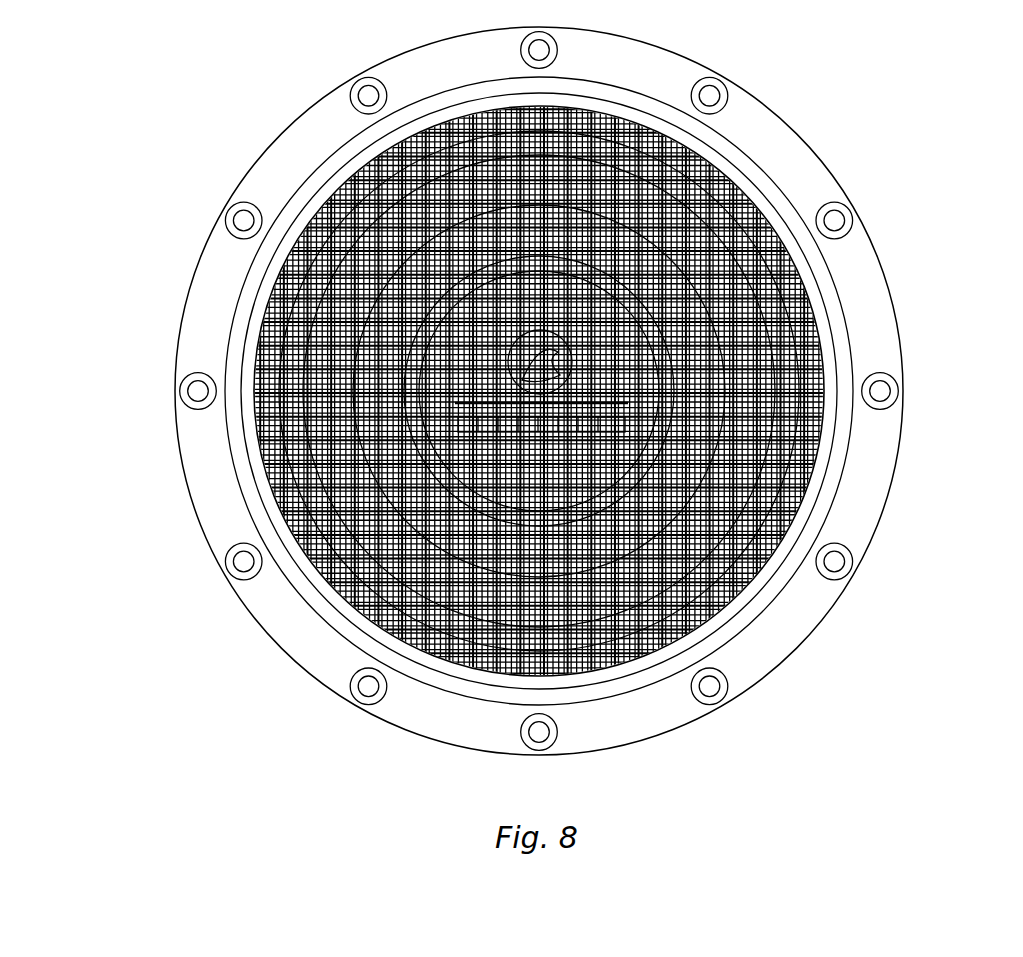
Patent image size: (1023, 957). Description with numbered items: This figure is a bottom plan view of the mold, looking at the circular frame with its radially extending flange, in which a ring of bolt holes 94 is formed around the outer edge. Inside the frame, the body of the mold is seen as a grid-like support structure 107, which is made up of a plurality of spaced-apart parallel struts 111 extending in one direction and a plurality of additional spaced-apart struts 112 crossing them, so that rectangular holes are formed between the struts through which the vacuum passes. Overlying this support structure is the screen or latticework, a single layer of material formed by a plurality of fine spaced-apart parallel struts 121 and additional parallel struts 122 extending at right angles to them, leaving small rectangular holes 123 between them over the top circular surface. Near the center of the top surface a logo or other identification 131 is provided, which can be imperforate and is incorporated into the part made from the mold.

The bolt holes 94 is at (848, 217).
The grid-like support structure 107 is at (812, 293).
The spaced-apart parallel struts 111 is at (813, 312).
The additional spaced-apart struts 112 is at (818, 340).
The spaced-apart parallel struts 121 is at (793, 510).
The additional spaced-apart parallel struts 122 is at (790, 512).
The holes 123 is at (790, 519).
The logo or other identification 131 is at (455, 437).